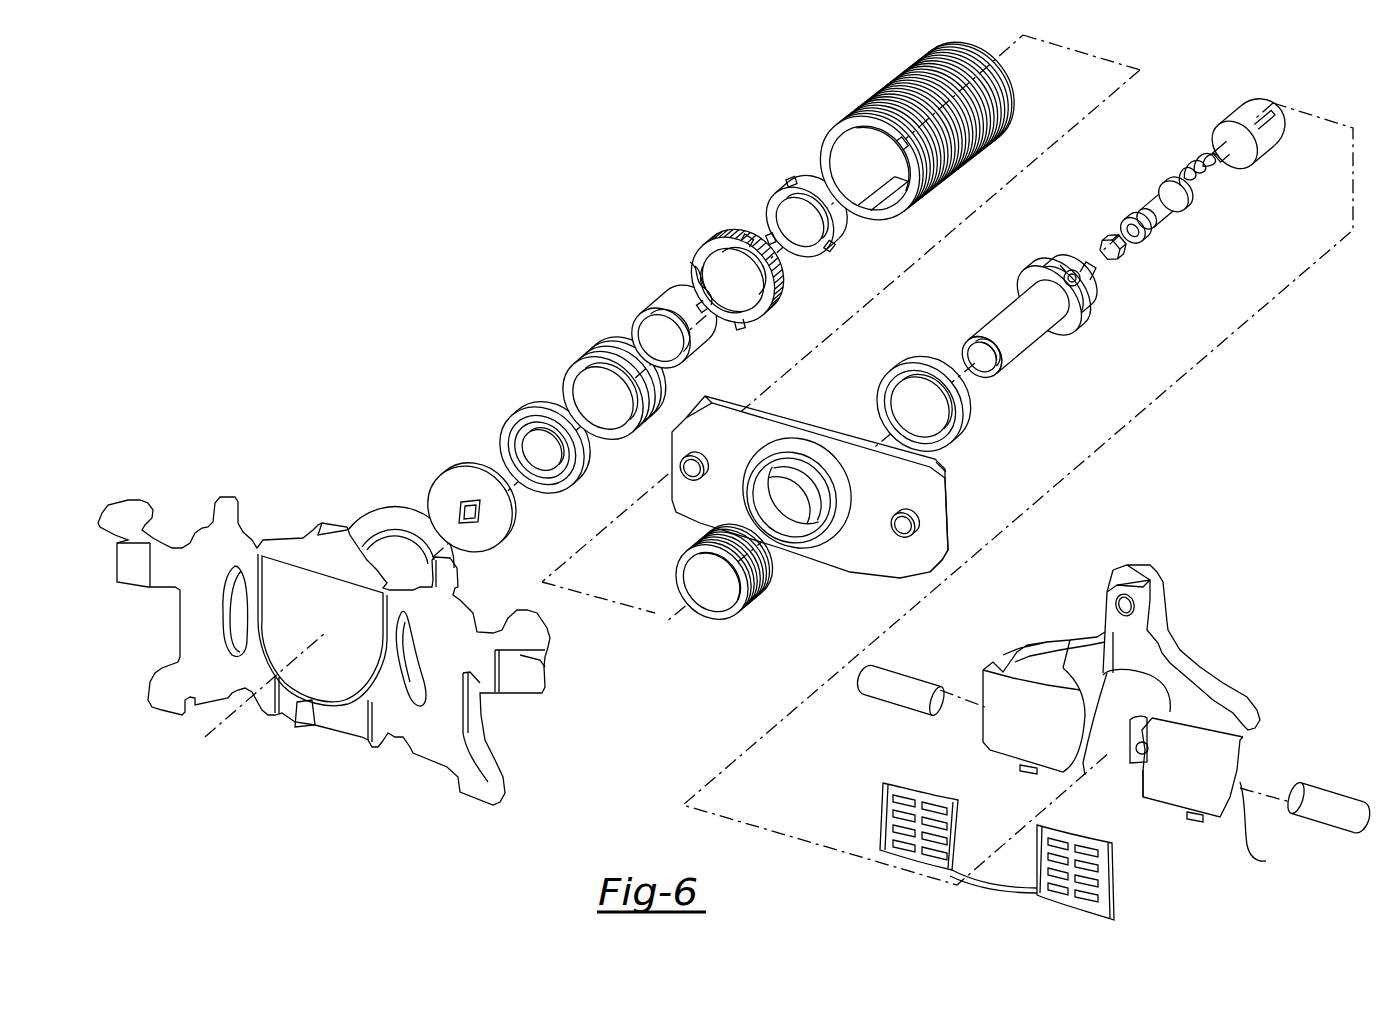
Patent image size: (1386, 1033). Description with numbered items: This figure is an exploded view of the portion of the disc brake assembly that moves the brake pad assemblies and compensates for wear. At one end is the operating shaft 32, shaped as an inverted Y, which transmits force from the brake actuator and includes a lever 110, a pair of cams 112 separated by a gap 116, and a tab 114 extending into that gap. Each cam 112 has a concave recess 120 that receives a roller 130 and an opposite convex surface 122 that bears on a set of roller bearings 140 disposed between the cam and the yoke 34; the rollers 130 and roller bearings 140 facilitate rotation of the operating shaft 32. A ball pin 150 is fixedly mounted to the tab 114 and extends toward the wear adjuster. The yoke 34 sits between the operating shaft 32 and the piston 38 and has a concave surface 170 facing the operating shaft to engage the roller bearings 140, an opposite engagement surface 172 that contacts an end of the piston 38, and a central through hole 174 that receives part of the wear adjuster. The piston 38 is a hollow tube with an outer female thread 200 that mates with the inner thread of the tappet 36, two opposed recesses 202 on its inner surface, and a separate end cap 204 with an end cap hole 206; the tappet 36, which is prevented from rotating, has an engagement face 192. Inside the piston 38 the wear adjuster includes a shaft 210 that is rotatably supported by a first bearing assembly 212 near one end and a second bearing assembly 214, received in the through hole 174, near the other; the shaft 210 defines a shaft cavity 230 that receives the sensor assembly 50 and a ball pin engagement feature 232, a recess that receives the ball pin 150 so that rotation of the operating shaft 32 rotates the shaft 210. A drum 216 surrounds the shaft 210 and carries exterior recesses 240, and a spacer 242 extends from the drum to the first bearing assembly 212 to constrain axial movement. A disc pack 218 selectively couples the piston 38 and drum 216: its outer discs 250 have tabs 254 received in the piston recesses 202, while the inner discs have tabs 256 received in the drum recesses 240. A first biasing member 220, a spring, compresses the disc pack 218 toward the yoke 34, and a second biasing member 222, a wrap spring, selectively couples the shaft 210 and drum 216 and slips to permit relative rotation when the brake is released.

The tappet 36 is at (323, 527).
The engagement face 192 is at (217, 686).
The end cap 204 is at (455, 478).
The end cap hole 206 is at (463, 512).
The first bearing assembly 212 is at (530, 408).
The first biasing member 220 is at (600, 340).
The spacer 242 is at (672, 305).
The tab 256 is at (703, 293).
The disc pack 218 is at (710, 243).
The tab 254 is at (745, 245).
The recess 240 is at (784, 210).
The drum 216 is at (798, 192).
The outer disc 250 is at (772, 318).
The outer female thread 200 is at (870, 100).
The piston 38 is at (893, 78).
The recess 202 is at (868, 128).
The yoke 34 is at (767, 417).
The concave surface 170 is at (952, 530).
The engagement surface 172 is at (873, 533).
The through hole 174 is at (790, 528).
The second biasing member 222 is at (745, 603).
The second bearing assembly 214 is at (965, 420).
The shaft cavity 230 is at (980, 370).
The shaft 210 is at (1018, 290).
The ball pin engagement feature 232 is at (1073, 264).
The ball pin 150 is at (1103, 273).
The sensor assembly 50 is at (1160, 185).
The operating shaft 32 is at (1050, 640).
The lever 110 is at (1165, 592).
The cam 112 is at (995, 683).
The roller 130 is at (924, 702).
The convex surface 122 is at (1044, 729).
The tab 114 is at (1133, 740).
The gap 116 is at (1113, 752).
The concave recess 120 is at (1265, 861).
The roller bearings 140 is at (927, 808).